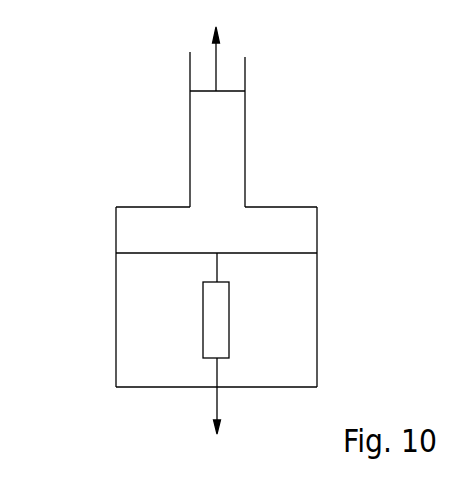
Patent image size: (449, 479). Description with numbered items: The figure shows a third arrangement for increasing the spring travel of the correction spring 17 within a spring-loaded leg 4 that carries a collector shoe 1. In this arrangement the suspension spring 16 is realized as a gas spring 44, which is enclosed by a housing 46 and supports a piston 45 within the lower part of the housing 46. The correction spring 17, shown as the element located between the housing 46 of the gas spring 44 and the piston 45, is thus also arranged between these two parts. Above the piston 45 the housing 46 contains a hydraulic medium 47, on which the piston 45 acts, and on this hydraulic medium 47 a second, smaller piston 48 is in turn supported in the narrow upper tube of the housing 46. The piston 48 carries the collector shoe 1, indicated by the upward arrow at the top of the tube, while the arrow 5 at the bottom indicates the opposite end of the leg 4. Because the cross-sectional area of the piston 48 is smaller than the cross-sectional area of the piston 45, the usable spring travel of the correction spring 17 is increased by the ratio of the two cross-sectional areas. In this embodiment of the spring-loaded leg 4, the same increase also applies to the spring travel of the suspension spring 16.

The collector shoe 1 is at (218, 46).
The spring-loaded leg 4 is at (288, 401).
The gas flow / inlet 5 is at (448, 183).
The suspension spring 16 is at (150, 372).
The correction spring 17 is at (229, 322).
The gas spring 44 is at (93, 348).
The piston 45 is at (150, 253).
The housing 46 is at (116, 273).
The hydraulic medium 47 is at (267, 222).
The piston 48 is at (235, 104).